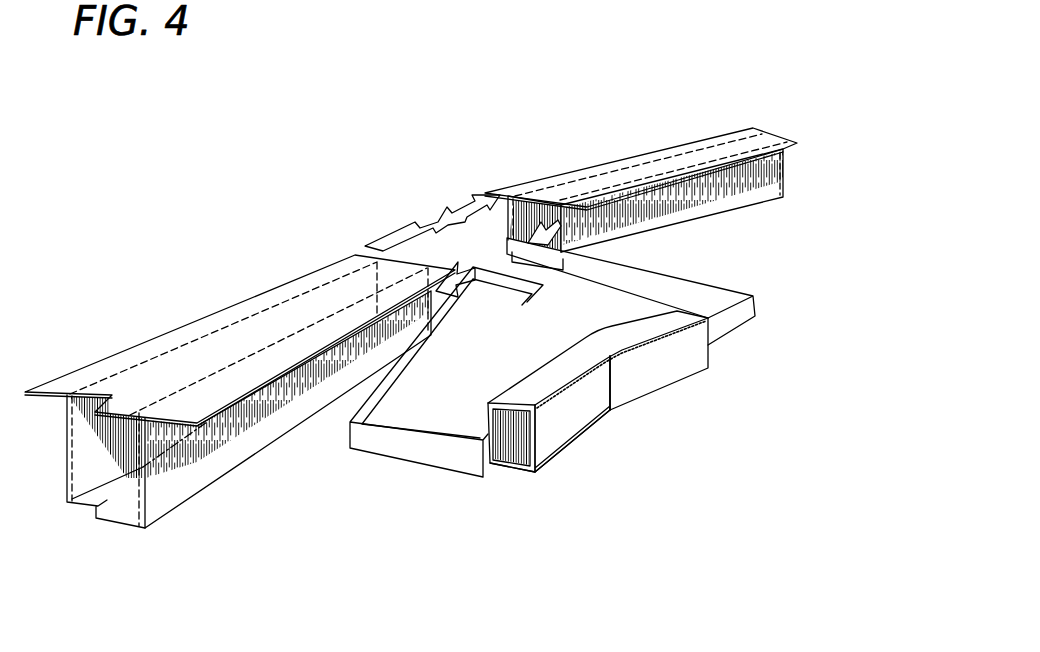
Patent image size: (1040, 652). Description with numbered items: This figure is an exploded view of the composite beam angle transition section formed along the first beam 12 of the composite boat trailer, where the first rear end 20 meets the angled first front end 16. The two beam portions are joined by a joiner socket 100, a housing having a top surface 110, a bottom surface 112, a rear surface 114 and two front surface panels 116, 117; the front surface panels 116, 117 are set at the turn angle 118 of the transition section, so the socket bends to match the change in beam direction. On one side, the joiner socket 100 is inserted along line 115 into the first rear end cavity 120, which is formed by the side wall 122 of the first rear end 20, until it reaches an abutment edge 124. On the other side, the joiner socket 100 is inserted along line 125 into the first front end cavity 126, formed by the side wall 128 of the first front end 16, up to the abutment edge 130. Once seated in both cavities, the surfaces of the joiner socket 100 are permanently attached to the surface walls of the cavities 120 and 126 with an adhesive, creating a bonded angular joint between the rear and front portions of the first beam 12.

The first beam 12 is at (252, 215).
The first rear end 20 is at (245, 340).
The side wall 122 is at (279, 422).
The first rear end cavity 120 is at (130, 486).
The abutment edge 124 is at (401, 260).
The first front end 16 is at (619, 174).
The abutment edge 130 is at (487, 193).
The first front end cavity 126 is at (523, 223).
The side wall 128 is at (678, 213).
The insertion line 125 is at (745, 318).
The joiner socket 100 is at (577, 418).
The insertion line 115 is at (415, 450).
The top surface 110 is at (541, 260).
The rear surface 114 is at (490, 403).
The front surface panel 116 is at (570, 418).
The front surface panel 117 is at (647, 375).
The turn angle 118 is at (612, 393).
The bottom surface 112 is at (518, 460).